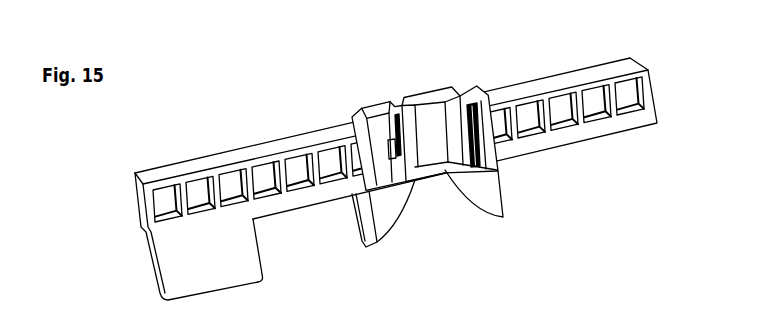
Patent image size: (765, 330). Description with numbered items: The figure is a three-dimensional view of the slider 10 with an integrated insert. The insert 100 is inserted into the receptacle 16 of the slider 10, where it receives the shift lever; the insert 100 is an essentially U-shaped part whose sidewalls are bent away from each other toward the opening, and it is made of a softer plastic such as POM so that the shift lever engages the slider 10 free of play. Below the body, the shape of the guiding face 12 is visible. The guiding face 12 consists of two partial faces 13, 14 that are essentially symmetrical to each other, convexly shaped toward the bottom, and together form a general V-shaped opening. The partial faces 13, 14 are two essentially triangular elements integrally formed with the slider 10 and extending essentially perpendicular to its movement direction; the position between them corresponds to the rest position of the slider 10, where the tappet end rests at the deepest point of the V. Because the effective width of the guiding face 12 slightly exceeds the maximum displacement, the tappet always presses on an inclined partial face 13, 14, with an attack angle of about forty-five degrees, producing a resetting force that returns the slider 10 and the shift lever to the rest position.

The slider 10 is at (598, 105).
The insert 100 is at (455, 135).
The receptacle 16 is at (391, 130).
The guiding face 12 is at (437, 193).
The partial face 13 is at (389, 231).
The partial face 14 is at (482, 210).